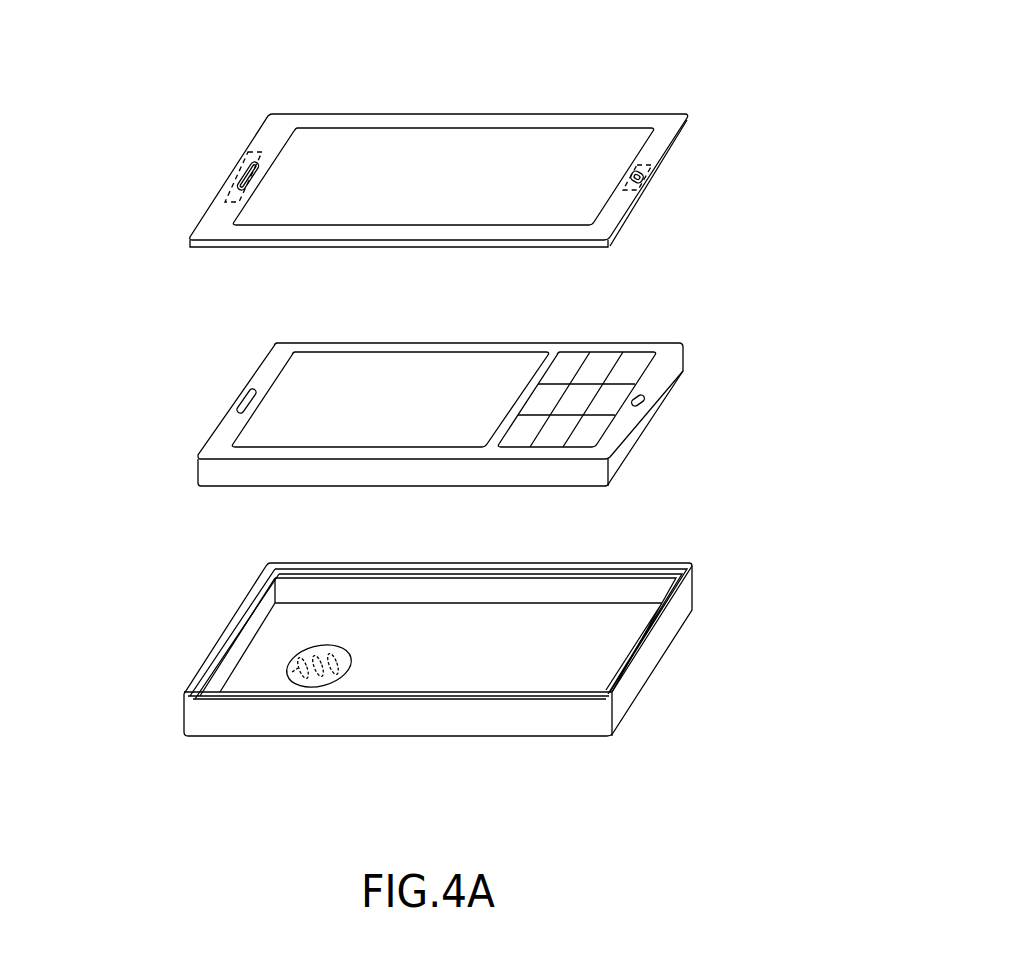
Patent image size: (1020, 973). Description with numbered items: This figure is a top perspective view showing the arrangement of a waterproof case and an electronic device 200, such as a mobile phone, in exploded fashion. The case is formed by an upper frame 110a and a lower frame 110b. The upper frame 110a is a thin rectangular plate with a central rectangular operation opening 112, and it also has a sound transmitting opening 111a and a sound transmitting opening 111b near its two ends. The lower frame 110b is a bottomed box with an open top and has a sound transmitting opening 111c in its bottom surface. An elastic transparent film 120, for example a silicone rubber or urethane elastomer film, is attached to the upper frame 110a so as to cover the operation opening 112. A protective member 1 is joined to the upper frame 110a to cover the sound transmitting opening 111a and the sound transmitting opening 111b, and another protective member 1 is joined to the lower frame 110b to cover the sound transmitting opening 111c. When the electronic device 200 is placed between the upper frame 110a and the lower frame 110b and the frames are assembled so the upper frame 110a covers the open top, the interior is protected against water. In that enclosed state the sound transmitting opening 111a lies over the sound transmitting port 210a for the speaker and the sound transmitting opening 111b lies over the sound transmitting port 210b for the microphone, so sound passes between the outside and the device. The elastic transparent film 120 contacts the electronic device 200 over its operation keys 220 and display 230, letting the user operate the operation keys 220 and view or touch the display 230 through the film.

The protective member 1 is at (252, 152).
The upper frame 110a is at (553, 118).
The lower frame 110b is at (207, 720).
The sound transmitting opening 111a is at (250, 174).
The sound transmitting opening 111b is at (652, 178).
The sound transmitting opening 111c is at (290, 670).
The operation opening 112 is at (470, 128).
The elastic transparent film 120 is at (387, 155).
The electronic device 200 is at (667, 350).
The sound transmitting port 210a is at (248, 394).
The sound transmitting port 210b is at (644, 402).
The operation keys 220 is at (568, 395).
The display 230 is at (375, 378).